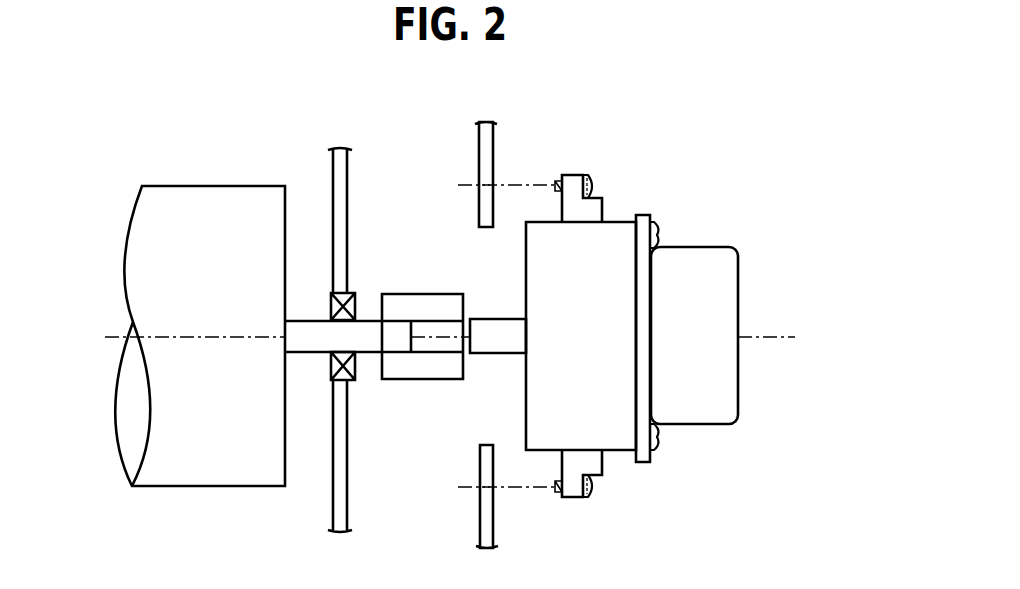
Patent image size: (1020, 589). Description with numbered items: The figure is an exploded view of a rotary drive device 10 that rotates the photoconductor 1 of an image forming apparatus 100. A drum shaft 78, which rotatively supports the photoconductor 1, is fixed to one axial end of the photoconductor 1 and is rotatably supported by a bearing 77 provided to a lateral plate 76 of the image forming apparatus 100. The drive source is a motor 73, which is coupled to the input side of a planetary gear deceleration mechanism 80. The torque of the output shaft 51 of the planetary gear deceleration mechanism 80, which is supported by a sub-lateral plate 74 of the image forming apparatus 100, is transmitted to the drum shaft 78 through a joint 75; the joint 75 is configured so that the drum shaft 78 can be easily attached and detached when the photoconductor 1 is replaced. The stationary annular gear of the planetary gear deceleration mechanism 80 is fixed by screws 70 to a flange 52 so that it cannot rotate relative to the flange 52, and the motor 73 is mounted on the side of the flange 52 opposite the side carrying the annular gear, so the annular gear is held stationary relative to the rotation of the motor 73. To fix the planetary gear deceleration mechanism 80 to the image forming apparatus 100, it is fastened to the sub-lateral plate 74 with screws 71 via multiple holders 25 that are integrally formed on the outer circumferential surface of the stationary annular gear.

The image forming apparatus 100 is at (326, 92).
The photoconductor 1 is at (222, 488).
The rotary drive device 10 is at (688, 162).
The holders 25 is at (603, 212).
The output shaft 51 is at (500, 318).
The flange 52 is at (650, 462).
The screws 70 is at (660, 231).
The screws 71 is at (593, 176).
The motor 73 is at (738, 372).
The sub-lateral plate 74 is at (493, 146).
The joint 75 is at (420, 381).
The lateral plate 76 is at (347, 497).
The bearing 77 is at (328, 367).
The drum shaft 78 is at (315, 320).
The planetary gear deceleration mechanism 80 is at (620, 456).